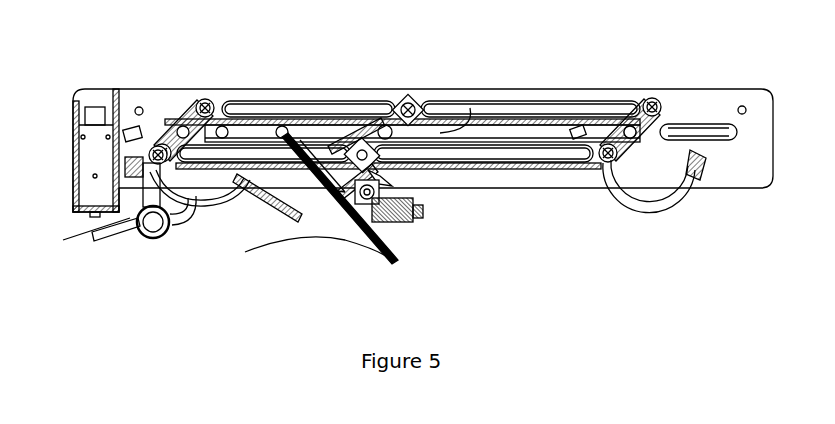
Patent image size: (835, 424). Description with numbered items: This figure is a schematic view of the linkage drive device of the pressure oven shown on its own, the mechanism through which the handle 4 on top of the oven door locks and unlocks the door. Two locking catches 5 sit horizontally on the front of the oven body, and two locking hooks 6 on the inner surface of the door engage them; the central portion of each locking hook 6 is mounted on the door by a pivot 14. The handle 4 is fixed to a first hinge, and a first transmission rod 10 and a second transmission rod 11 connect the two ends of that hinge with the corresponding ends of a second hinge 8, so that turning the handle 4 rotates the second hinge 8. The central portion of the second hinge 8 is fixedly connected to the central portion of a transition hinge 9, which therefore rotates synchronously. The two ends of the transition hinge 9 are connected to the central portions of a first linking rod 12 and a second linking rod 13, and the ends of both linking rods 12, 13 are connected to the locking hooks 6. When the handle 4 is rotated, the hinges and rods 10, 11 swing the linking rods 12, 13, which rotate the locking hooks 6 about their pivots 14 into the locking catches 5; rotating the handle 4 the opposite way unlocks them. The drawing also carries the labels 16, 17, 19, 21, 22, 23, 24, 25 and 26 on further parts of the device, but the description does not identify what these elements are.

The handle 4 is at (353, 232).
The locking catch 5 is at (247, 127).
The locking hook 6 is at (208, 212).
The second hinge 8 is at (387, 92).
The transition hinge 9 is at (468, 108).
The first transmission rod 10 is at (330, 130).
The second transmission rod 11 is at (416, 182).
The first linking rod 12 is at (569, 101).
The second linking rod 13 is at (552, 163).
The pivot 14 is at (185, 106).
The pivot bearing 16 is at (392, 232).
The motor 17 is at (403, 233).
The cylinder 19 is at (150, 223).
The lever 21 is at (93, 230).
The mounting bracket 22 is at (83, 186).
The handle bar 23 is at (120, 247).
The curved arm 24 is at (190, 217).
The block 25 is at (125, 160).
The pivot bearing 26 is at (130, 175).